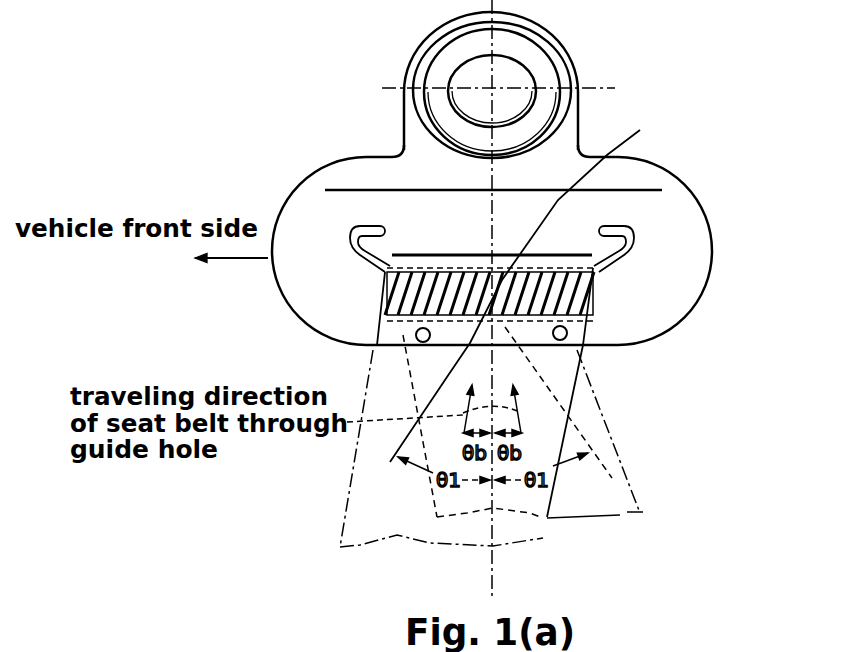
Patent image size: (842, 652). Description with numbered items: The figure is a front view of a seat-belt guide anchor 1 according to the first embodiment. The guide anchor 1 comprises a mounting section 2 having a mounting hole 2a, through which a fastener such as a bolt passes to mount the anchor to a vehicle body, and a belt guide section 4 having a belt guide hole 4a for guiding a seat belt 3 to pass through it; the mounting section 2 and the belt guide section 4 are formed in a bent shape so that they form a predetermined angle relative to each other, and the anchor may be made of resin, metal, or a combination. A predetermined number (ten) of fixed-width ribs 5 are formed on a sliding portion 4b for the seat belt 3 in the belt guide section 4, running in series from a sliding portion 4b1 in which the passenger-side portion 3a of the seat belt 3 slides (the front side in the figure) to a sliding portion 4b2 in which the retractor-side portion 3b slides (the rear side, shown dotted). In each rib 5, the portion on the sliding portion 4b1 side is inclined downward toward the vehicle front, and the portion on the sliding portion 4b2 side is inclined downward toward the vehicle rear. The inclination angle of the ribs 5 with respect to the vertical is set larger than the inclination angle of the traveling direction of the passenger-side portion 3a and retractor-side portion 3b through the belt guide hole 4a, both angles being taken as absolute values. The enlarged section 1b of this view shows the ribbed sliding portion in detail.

The seat-belt guide anchor 1 is at (332, 82).
The section 1b is at (434, 256).
The mounting section 2 is at (413, 169).
The mounting hole 2a is at (533, 75).
The seat belt 3 is at (502, 481).
The passenger-side portion of the seat belt 3a is at (543, 537).
The retractor-side portion of the seat belt 3b is at (618, 515).
The belt guide section 4 is at (672, 263).
The belt guide hole 4a is at (523, 287).
The sliding portion 4b is at (449, 332).
The sliding portion (passenger side) 4b1 is at (520, 330).
The sliding portion (retractor side) 4b2 is at (551, 426).
The ribs 5 is at (403, 320).